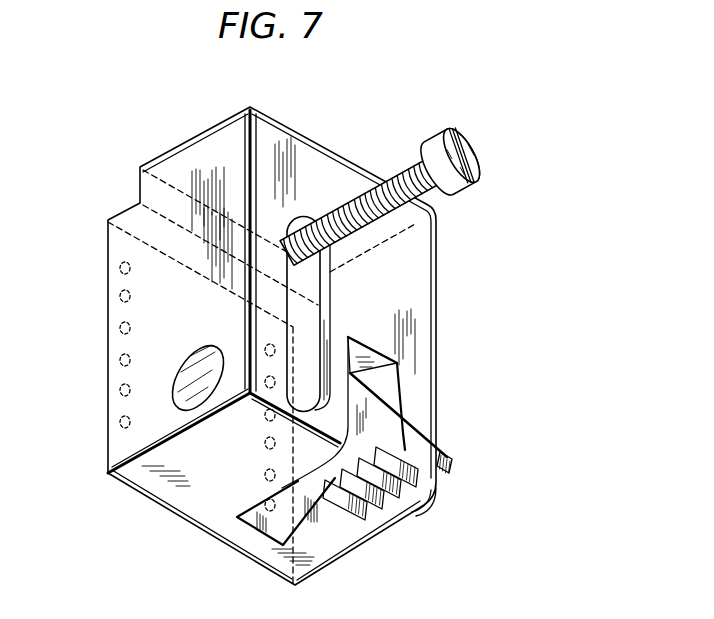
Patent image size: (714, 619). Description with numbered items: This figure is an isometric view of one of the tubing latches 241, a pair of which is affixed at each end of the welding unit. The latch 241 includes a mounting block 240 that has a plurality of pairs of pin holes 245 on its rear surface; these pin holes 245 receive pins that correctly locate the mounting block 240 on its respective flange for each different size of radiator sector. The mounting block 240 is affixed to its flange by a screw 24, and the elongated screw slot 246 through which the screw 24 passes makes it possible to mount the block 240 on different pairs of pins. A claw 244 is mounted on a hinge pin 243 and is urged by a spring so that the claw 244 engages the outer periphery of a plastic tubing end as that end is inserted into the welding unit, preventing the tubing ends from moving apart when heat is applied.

The screw 24 is at (483, 162).
The mounting block 240 is at (352, 548).
The tubing latch 241 is at (544, 299).
The hinge pin 243 is at (190, 360).
The claw 244 is at (443, 455).
The pin holes 245 is at (112, 296).
The screw slot 246 is at (333, 330).